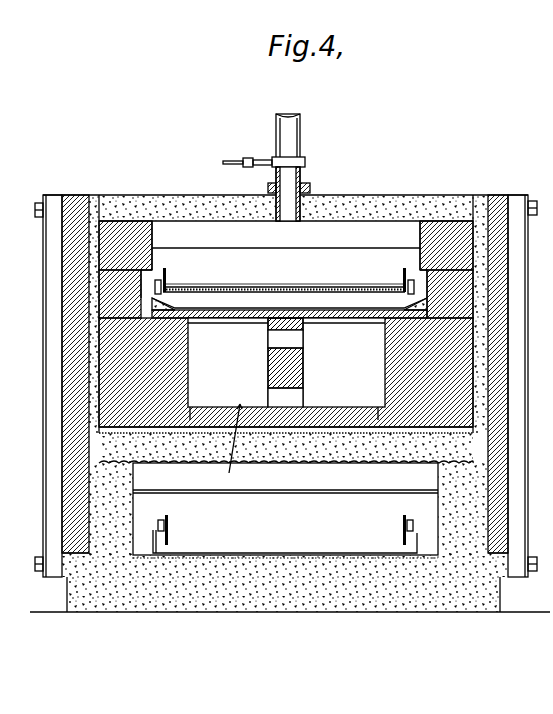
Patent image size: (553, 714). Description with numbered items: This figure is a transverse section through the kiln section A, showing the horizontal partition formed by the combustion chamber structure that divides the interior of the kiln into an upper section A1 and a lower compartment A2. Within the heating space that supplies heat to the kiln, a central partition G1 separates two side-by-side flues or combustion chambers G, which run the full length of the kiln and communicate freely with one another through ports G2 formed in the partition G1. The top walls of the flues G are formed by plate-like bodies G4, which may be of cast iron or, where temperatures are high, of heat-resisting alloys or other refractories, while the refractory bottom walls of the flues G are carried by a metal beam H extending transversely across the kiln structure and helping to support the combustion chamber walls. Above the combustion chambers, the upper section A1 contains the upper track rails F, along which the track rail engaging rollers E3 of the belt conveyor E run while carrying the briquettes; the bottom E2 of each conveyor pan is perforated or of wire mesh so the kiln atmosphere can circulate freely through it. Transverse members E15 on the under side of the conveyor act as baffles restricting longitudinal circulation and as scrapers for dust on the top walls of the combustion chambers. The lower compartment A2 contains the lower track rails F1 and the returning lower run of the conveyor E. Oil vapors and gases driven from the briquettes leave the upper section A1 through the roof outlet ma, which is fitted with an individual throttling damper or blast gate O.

The kiln section A is at (172, 196).
The upper section A1 is at (286, 324).
The lower compartment A2 is at (285, 544).
The throttling damper or blast gate O is at (300, 157).
The outlet ma is at (300, 177).
The belt conveyor E is at (325, 270).
The pan bottom E2 is at (286, 289).
The track rail engaging roller E3 is at (160, 288).
The transverse member E15 is at (212, 301).
The upper track rail F is at (184, 293).
The lower track rail F1 is at (173, 548).
The flue or combustion chamber G is at (286, 369).
The partition G1 is at (268, 375).
The port G2 is at (298, 398).
The plate-like body G4 is at (358, 331).
The metal beam H is at (285, 479).